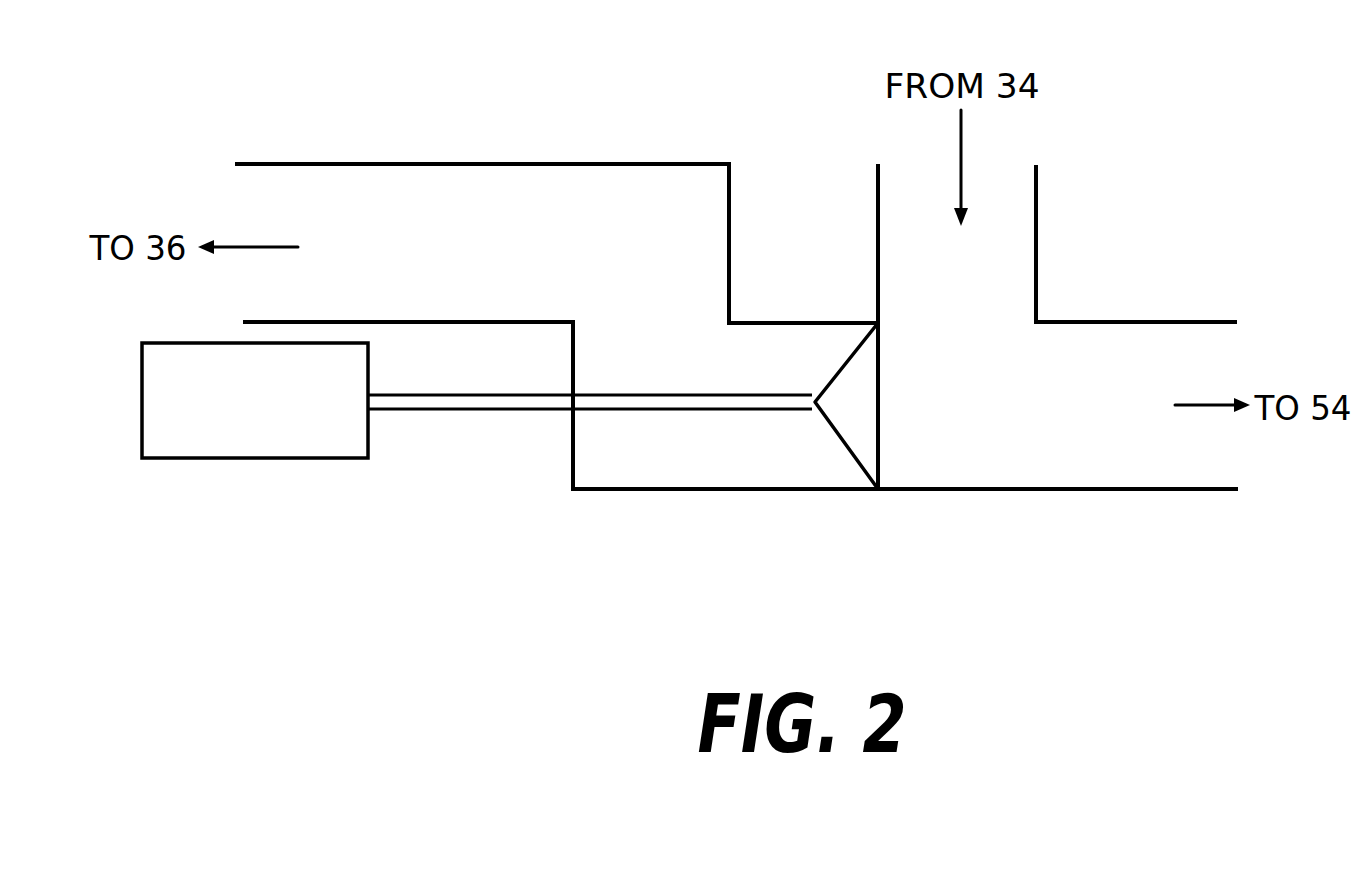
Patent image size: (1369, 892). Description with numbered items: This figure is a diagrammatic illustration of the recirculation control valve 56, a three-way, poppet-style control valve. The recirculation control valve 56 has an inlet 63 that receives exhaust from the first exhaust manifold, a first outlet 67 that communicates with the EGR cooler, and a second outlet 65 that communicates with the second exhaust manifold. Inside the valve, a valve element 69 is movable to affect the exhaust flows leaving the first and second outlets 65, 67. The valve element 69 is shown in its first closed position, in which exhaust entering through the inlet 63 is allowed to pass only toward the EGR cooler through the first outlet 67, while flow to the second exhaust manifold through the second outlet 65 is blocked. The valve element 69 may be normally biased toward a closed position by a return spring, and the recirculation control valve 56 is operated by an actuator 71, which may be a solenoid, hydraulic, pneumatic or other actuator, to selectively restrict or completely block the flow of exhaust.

The second outlet 65 is at (245, 202).
The inlet 63 is at (1017, 182).
The recirculation control valve 56 is at (1141, 563).
The first outlet 67 is at (1238, 458).
The valve element 69 is at (866, 435).
The actuator 71 is at (210, 430).